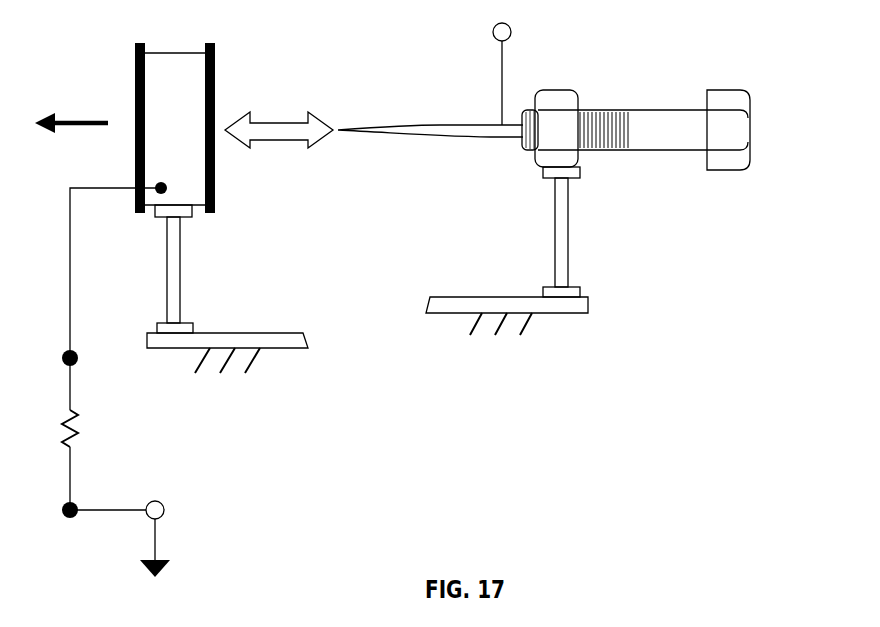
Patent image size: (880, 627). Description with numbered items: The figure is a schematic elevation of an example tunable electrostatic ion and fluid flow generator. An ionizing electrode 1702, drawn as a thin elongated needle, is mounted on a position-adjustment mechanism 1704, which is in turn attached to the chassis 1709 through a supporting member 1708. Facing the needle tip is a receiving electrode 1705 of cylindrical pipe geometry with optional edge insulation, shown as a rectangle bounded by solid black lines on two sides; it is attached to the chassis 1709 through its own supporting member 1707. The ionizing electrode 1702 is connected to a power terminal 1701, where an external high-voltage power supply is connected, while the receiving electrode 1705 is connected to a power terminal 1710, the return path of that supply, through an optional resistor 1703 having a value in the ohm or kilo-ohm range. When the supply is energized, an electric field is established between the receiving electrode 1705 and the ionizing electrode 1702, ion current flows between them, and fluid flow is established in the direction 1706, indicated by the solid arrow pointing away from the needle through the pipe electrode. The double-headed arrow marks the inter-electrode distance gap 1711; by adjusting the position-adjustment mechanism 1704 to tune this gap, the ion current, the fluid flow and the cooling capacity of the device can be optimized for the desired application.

The power terminal 1701 is at (511, 36).
The ionizing electrode 1702 is at (405, 127).
The resistor 1703 is at (78, 441).
The position-adjustment mechanism 1704 is at (730, 90).
The receiving electrode 1705 is at (172, 53).
The direction of fluid flow 1706 is at (96, 127).
The supporting member 1707 is at (265, 333).
The supporting member 1708 is at (513, 296).
The chassis 1709 is at (476, 323).
The power terminal 1710 is at (165, 515).
The inter-electrode distance gap 1711 is at (267, 142).